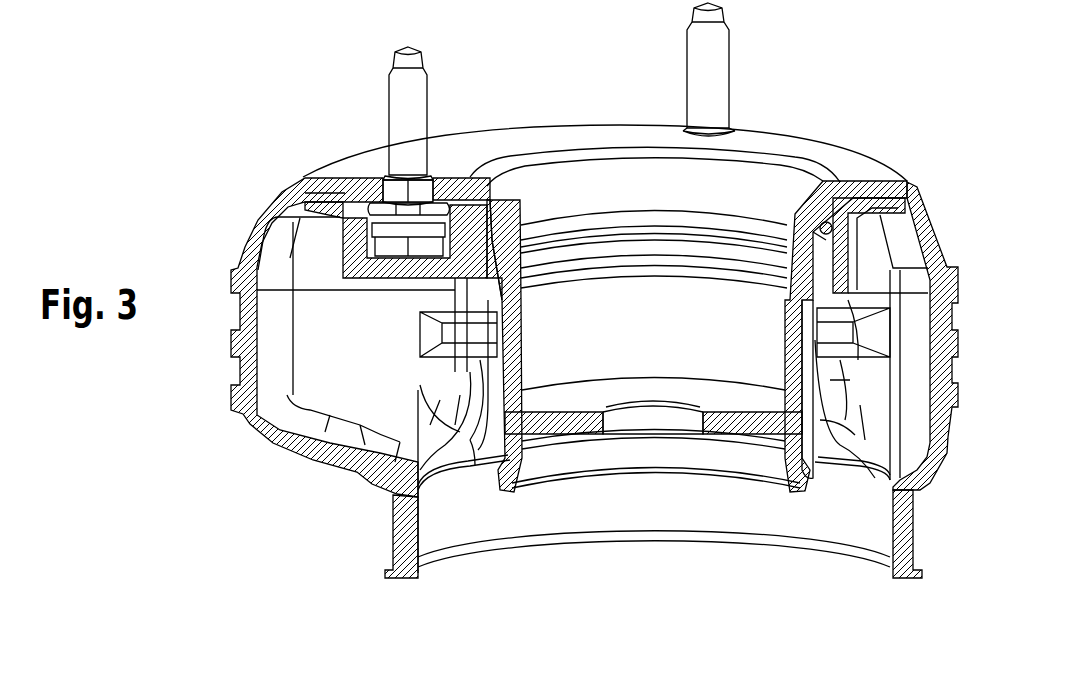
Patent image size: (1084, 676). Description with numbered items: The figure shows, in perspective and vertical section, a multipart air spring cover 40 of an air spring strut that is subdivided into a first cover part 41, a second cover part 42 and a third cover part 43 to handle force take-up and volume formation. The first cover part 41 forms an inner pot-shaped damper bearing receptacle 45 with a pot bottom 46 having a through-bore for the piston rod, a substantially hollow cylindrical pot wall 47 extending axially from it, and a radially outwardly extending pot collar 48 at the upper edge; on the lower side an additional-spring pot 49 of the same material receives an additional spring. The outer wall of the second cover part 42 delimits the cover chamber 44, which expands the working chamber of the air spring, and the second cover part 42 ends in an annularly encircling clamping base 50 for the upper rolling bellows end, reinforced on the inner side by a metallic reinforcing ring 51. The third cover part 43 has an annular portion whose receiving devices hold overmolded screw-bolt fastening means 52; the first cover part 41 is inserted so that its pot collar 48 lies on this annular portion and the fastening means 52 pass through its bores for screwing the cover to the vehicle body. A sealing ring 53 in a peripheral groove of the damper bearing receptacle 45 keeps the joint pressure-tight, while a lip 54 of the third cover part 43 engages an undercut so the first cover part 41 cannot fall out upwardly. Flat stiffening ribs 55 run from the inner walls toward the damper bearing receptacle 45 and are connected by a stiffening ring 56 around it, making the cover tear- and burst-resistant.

The air spring cover 40 is at (243, 130).
The first cover part 41 is at (516, 124).
The second cover part 42 is at (232, 375).
The third cover part 43 is at (238, 237).
The cover chamber 44 is at (357, 351).
The damper bearing receptacle 45 is at (533, 314).
The pot bottom 46 is at (718, 404).
The pot wall 47 is at (517, 362).
The pot collar 48 is at (860, 170).
The additional-spring pot 49 is at (790, 470).
The clamping base 50 is at (392, 540).
The reinforcing ring 51 is at (893, 540).
The fastening means 52 is at (400, 104).
The sealing ring 53 is at (503, 213).
The lip 54 is at (540, 268).
The stiffening ribs 55 is at (467, 453).
The stiffening ring 56 is at (420, 345).